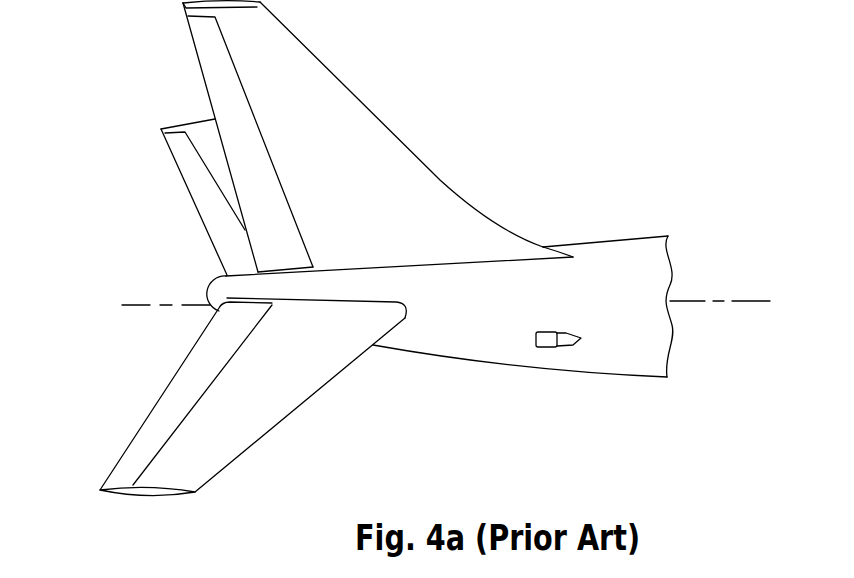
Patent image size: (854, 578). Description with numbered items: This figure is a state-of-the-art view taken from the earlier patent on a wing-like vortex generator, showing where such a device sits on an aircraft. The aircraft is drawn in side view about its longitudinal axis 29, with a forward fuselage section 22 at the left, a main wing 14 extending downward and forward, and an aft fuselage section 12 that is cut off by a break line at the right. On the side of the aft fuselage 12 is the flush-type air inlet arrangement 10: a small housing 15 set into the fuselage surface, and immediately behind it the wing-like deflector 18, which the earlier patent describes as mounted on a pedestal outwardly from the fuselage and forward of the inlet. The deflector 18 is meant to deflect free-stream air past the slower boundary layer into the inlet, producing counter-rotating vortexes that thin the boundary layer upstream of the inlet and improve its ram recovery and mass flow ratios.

The sensor device 10 is at (569, 359).
The aft fuselage section 12 is at (623, 258).
The wing 14 is at (252, 417).
The housing 15 is at (547, 347).
The emitter nozzle 18 is at (570, 354).
The forward fuselage section 22 is at (211, 290).
The longitudinal axis 29 is at (150, 305).